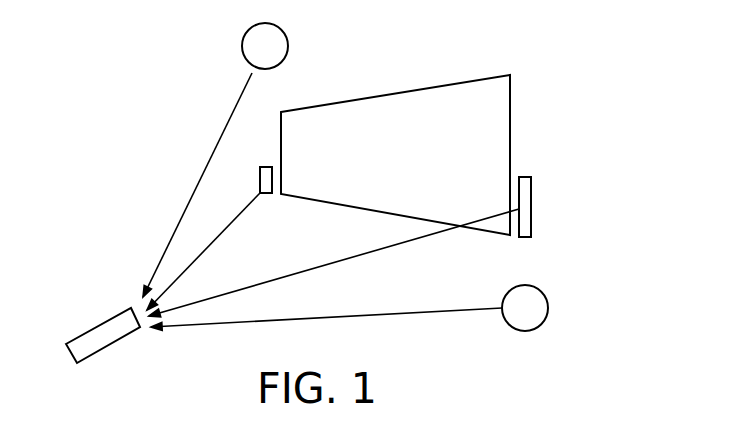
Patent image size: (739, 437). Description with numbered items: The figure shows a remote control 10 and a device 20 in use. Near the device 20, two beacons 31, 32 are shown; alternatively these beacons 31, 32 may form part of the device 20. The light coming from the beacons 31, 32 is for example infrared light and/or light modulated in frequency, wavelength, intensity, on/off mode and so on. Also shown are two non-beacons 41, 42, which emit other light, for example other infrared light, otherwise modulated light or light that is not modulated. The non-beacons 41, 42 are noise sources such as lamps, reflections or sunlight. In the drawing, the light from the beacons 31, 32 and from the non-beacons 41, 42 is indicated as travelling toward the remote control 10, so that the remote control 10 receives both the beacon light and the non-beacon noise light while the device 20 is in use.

The remote control 10 is at (102, 322).
The device 20 is at (512, 100).
The beacon 31 is at (263, 167).
The beacon 32 is at (532, 206).
The non-beacon 41 is at (288, 48).
The non-beacon 42 is at (548, 308).